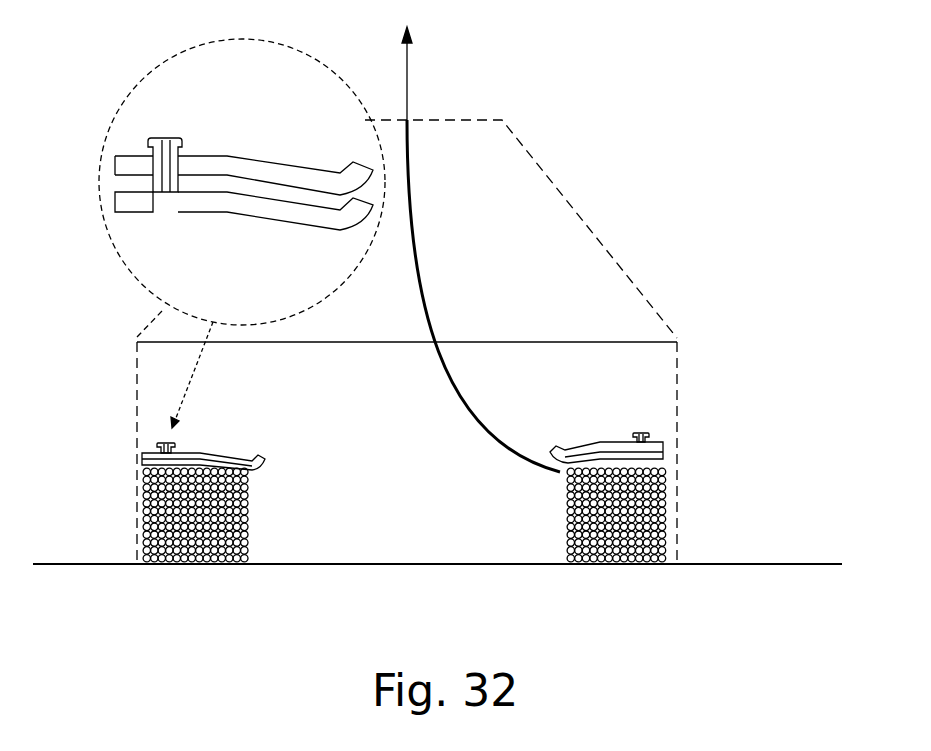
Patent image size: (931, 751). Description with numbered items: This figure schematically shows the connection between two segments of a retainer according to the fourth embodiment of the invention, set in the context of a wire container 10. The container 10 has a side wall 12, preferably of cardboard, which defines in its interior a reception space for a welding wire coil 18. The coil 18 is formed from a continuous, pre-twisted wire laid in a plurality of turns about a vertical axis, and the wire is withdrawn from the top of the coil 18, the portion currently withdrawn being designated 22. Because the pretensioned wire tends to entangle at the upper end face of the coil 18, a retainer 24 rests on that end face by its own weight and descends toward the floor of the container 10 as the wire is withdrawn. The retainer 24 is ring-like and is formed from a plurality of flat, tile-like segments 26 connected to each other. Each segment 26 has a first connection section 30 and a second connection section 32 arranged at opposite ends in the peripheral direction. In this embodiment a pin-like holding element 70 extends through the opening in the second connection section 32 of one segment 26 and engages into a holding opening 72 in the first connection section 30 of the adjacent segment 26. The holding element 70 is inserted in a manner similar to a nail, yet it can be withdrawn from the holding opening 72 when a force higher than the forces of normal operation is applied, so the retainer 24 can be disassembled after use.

The container 10 is at (135, 498).
The side wall 12 is at (678, 375).
The welding wire coil 18 is at (593, 563).
The portion currently withdrawn 22 is at (478, 408).
The retainer 24 is at (402, 516).
The segment 26 is at (205, 457).
The first connection section 30 is at (262, 212).
The second connection section 32 is at (207, 162).
The holding element 70 is at (178, 180).
The holding opening 72 is at (153, 202).